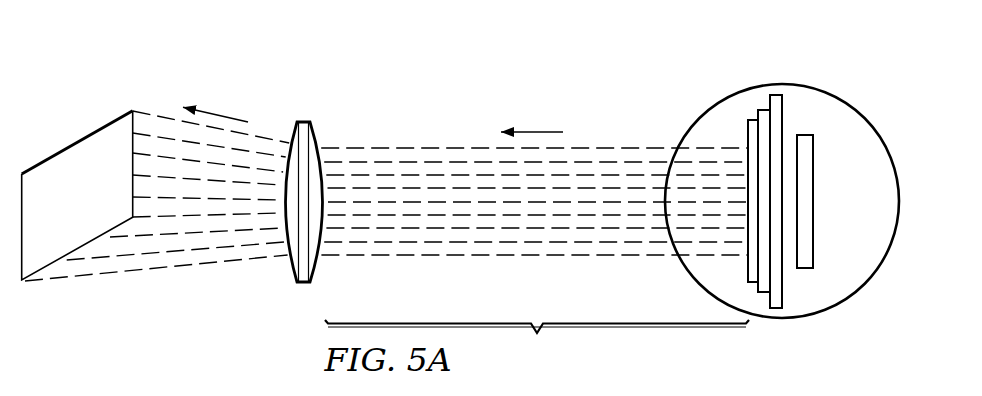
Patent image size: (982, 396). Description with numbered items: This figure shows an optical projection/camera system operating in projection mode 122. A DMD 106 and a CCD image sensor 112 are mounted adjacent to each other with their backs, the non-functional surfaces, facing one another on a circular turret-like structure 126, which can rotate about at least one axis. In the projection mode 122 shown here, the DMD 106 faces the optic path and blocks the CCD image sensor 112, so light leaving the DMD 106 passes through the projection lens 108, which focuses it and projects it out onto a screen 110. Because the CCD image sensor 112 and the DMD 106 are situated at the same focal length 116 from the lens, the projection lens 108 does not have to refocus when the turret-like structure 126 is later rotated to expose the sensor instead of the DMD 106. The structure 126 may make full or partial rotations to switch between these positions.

The DMD 106 is at (776, 95).
The projection lens 108 is at (303, 124).
The screen 110 is at (78, 142).
The CCD image sensor 112 is at (813, 197).
The focal length 116 is at (537, 342).
The projection mode 122 is at (364, 80).
The circular turret-like structure 126 is at (838, 303).